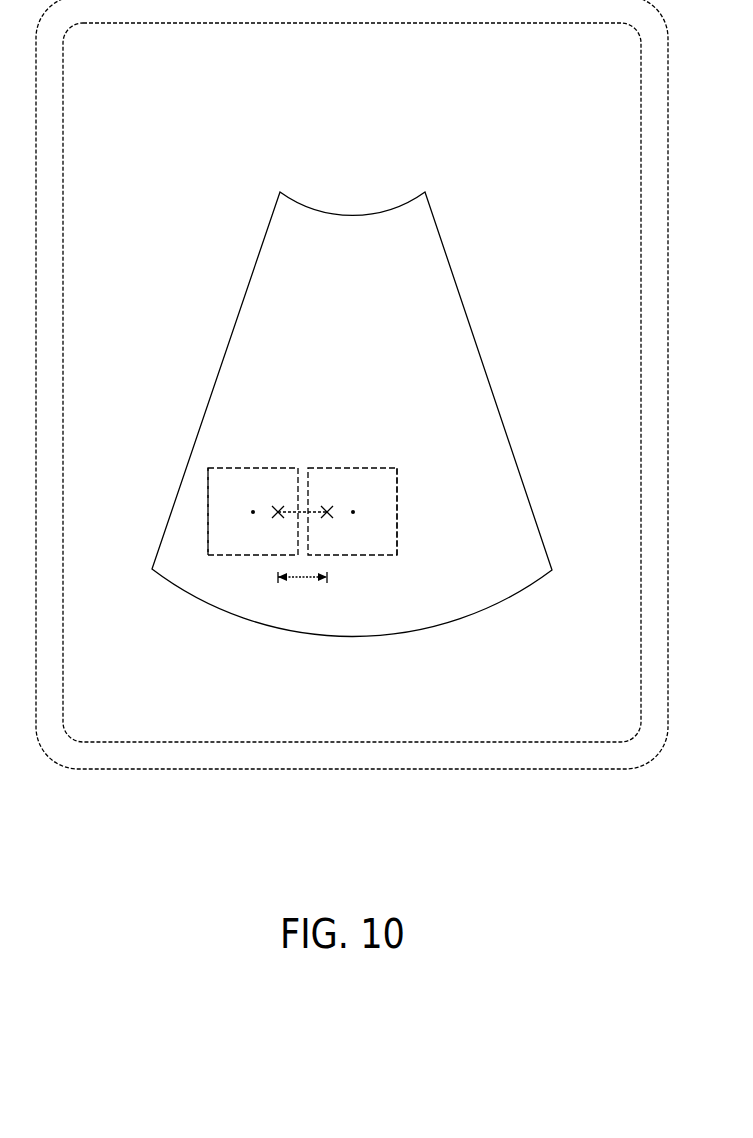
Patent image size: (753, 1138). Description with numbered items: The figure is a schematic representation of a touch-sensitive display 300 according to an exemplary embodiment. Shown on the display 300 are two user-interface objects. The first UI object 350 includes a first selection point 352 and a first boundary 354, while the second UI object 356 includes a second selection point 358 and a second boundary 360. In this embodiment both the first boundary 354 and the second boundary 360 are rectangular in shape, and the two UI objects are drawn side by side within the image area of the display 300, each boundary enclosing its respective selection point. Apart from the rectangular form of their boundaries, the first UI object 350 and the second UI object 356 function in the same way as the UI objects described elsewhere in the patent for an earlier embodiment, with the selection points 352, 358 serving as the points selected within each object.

The touch-sensitive display 300 is at (321, 81).
The first UI object 350 is at (252, 454).
The first selection point 352 is at (276, 520).
The first boundary 354 is at (208, 512).
The second UI object 356 is at (367, 454).
The second selection point 358 is at (327, 520).
The second boundary 360 is at (397, 509).